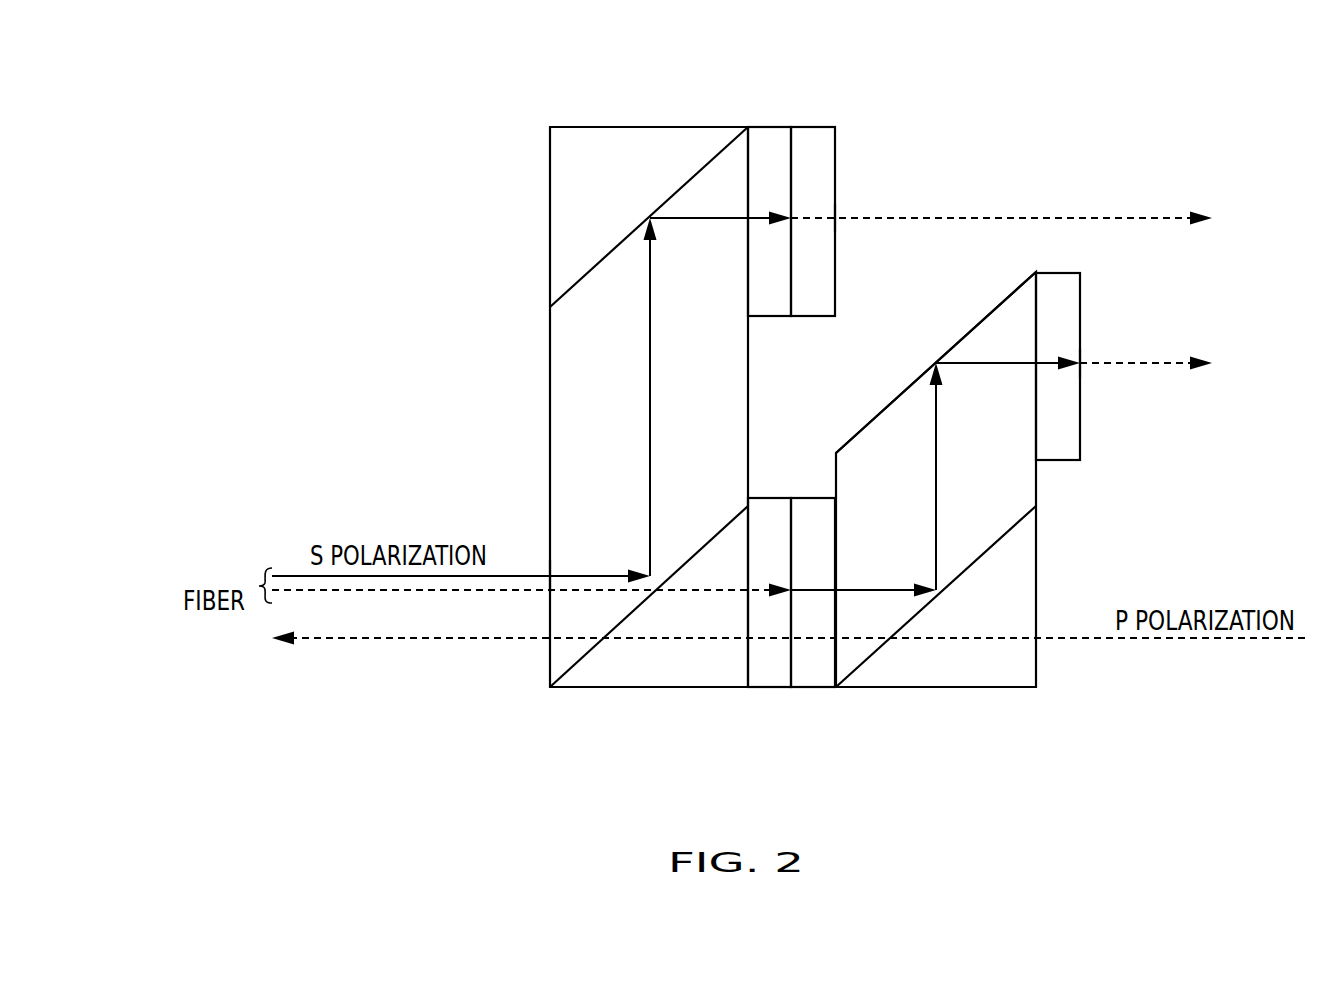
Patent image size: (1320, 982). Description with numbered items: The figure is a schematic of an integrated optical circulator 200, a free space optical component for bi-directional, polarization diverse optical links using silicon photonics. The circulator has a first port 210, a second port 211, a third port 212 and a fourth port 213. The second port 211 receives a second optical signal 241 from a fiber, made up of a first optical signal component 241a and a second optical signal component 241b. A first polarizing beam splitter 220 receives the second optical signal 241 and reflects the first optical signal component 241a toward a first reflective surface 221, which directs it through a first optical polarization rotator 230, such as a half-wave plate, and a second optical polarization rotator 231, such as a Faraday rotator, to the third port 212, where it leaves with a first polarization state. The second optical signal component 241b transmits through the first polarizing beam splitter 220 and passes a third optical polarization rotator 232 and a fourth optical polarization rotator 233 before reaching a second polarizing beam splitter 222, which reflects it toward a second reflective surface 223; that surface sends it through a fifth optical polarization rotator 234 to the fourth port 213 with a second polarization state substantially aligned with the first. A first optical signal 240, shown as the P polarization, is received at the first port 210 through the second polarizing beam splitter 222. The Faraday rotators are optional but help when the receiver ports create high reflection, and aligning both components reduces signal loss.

The integrated optical circulator 200 is at (162, 128).
The first port 210 is at (1036, 638).
The second port 211 is at (549, 575).
The third port 212 is at (837, 218).
The fourth port 213 is at (1083, 362).
The first polarizing beam splitter 220 is at (580, 655).
The first reflective surface 221 is at (608, 252).
The second polarizing beam splitter 222 is at (998, 537).
The second reflective surface 223 is at (948, 350).
The first optical polarization rotator 230 is at (765, 135).
The second optical polarization rotator 231 is at (817, 135).
The third optical polarization rotator 232 is at (777, 682).
The fourth optical polarization rotator 233 is at (813, 682).
The fifth optical polarization rotator 234 is at (1067, 308).
The first optical signal 240 is at (1148, 640).
The second optical signal 241 is at (266, 578).
The first optical signal component 241a is at (648, 445).
The second optical signal component 241b is at (713, 588).